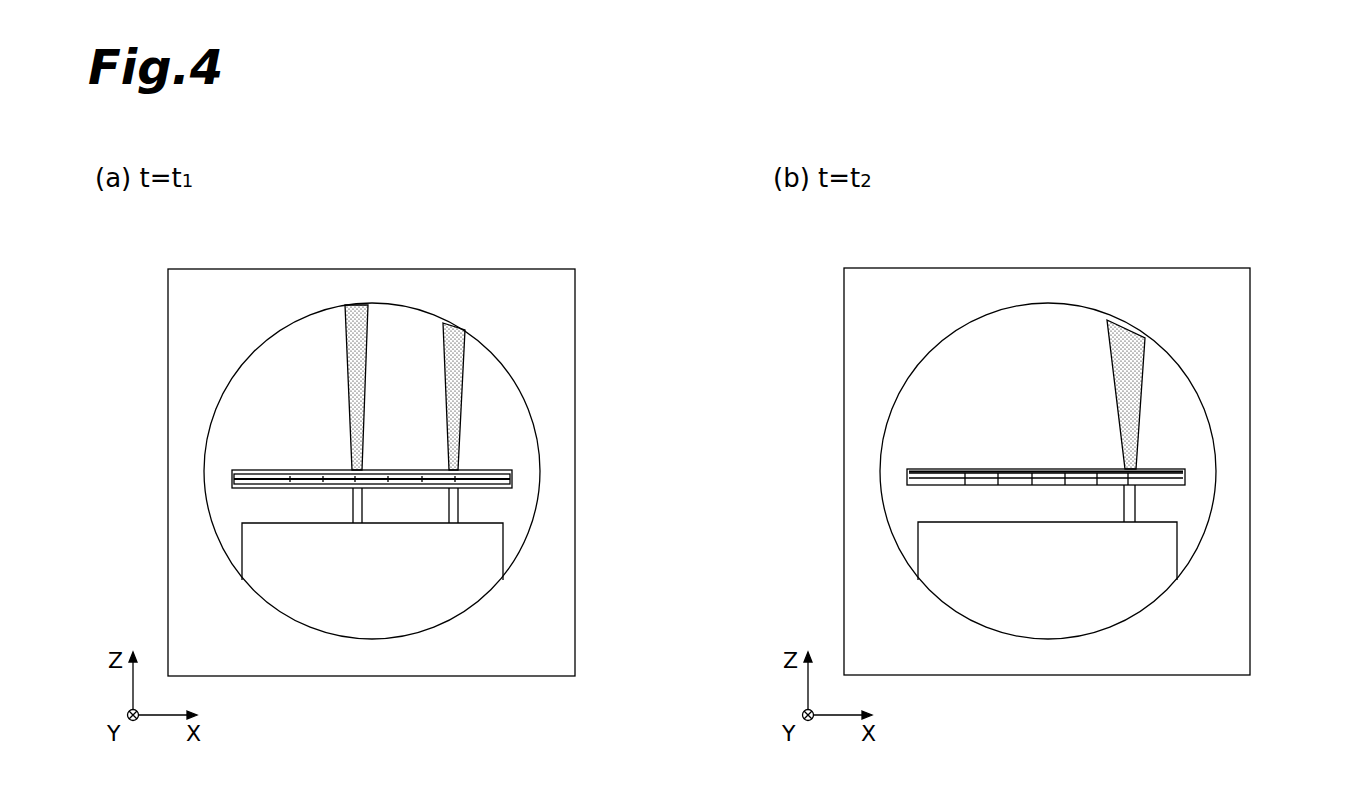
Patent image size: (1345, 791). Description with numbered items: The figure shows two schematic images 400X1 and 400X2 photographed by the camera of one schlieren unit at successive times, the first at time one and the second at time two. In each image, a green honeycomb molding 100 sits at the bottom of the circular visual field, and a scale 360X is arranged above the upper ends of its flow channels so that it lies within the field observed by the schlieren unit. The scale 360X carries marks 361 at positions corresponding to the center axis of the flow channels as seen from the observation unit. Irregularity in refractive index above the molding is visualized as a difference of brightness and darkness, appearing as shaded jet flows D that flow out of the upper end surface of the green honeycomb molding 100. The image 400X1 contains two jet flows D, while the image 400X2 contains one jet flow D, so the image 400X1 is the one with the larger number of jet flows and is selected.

The image 400X1 is at (492, 268).
The image 400X2 is at (1168, 268).
The scale 360X is at (512, 472).
The mark 361 is at (421, 479).
The green honeycomb molding 100 is at (503, 548).
The jet flow D is at (448, 394).